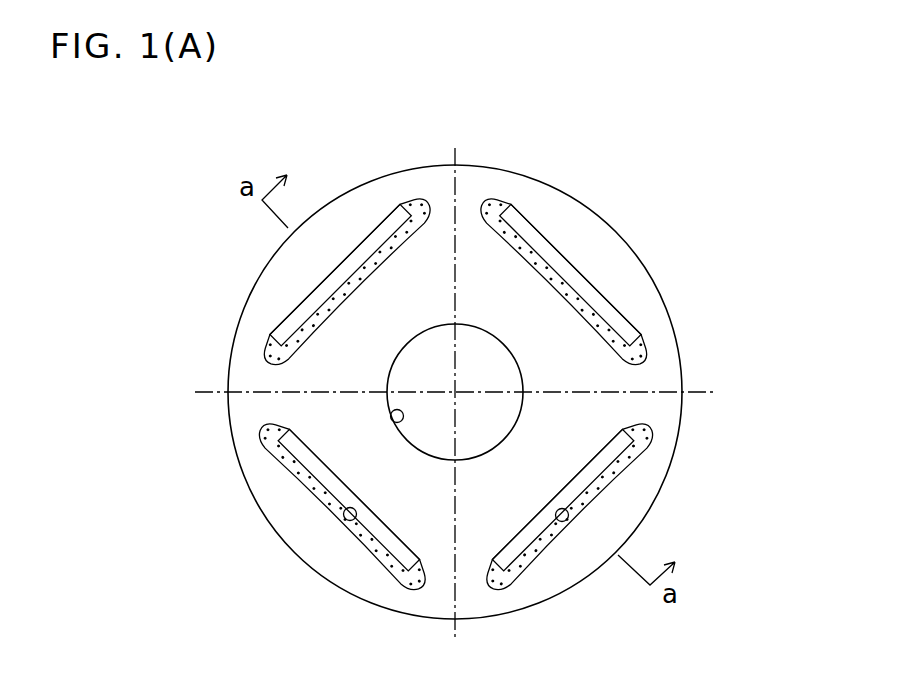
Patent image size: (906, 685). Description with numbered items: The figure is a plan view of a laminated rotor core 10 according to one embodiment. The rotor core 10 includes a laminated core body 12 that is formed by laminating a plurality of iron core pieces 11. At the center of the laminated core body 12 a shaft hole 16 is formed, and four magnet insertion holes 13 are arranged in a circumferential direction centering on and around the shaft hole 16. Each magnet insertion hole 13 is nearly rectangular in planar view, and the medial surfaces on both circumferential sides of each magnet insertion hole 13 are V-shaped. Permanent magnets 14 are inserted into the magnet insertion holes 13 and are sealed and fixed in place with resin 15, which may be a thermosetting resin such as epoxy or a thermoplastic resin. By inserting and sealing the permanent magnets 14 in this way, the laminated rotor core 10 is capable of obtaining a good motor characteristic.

The laminated rotor core 10 is at (699, 124).
The iron core piece 11 is at (480, 187).
The laminated core body 12 is at (564, 184).
The magnet insertion hole 13 is at (325, 320).
The permanent magnet 14 is at (379, 238).
The resin 15 is at (262, 355).
The shaft hole 16 is at (394, 422).